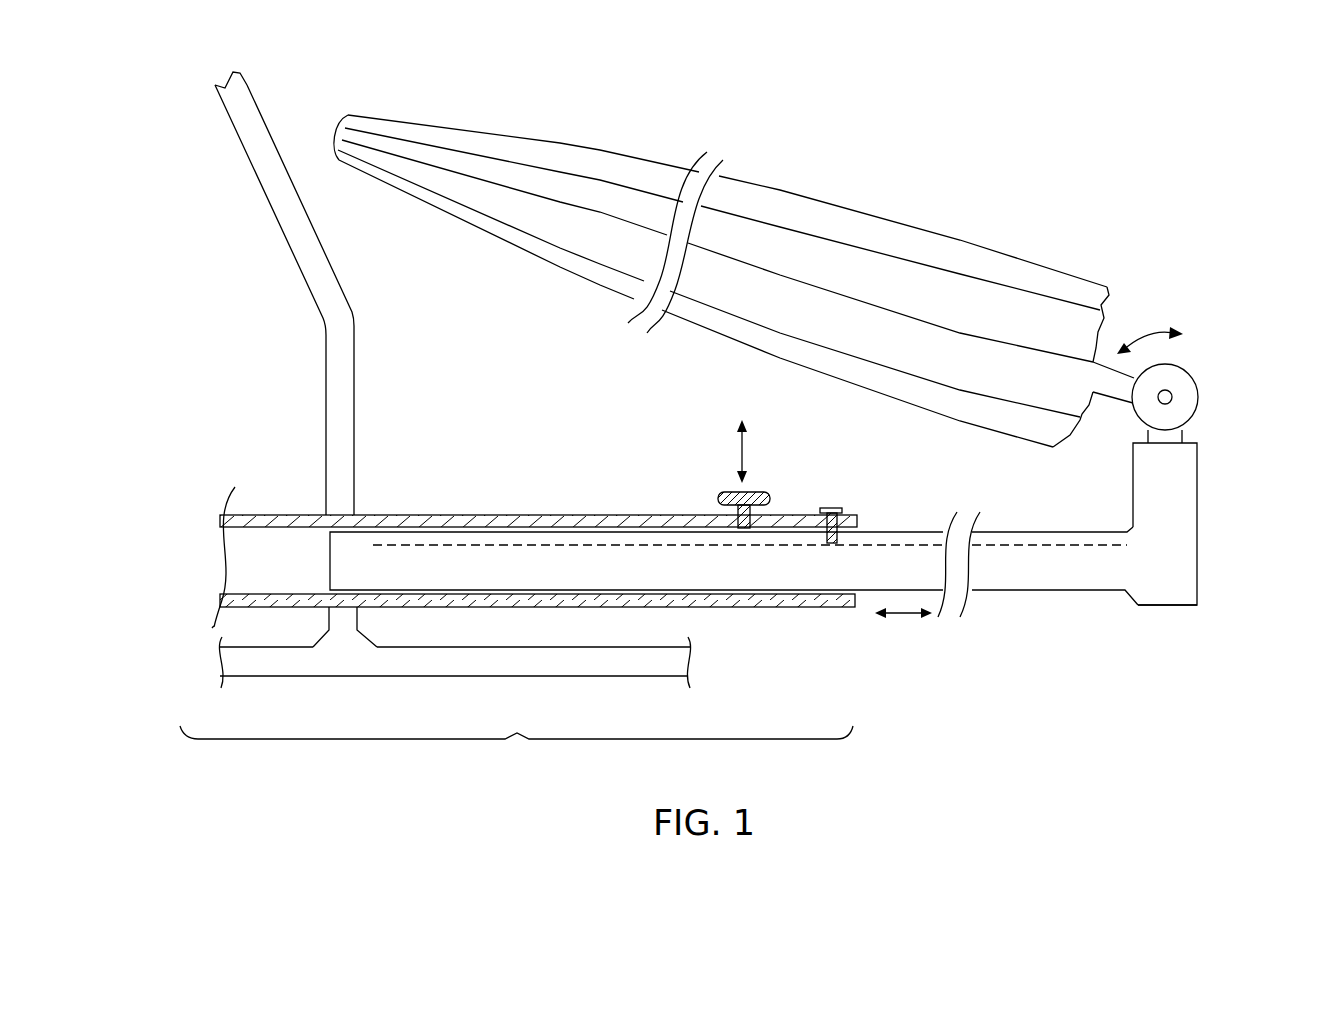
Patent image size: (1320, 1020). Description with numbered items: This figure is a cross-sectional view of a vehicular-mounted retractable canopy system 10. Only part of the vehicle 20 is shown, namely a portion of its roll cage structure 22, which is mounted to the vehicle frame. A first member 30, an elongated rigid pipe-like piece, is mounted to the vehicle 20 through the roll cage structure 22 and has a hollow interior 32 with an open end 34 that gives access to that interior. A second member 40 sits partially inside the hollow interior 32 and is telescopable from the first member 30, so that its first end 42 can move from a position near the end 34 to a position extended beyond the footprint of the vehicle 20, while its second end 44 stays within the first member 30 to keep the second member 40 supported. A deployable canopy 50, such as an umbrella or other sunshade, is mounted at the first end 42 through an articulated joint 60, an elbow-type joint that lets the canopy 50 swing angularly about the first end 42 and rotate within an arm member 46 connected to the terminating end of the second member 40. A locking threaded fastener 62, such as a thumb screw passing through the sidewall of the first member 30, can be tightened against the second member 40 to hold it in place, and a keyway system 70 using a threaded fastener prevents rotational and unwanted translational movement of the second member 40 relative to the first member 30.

The vehicular-mounted retractable canopy system 10 is at (232, 192).
The vehicle 20 is at (516, 757).
The roll cage structure 22 is at (328, 344).
The first member 30 is at (433, 517).
The hollow interior 32 is at (273, 550).
The end of the first member 34 is at (860, 593).
The second member 40 is at (1057, 575).
The first end 42 is at (1168, 616).
The second end 44 is at (365, 527).
The arm member 46 is at (1183, 503).
The deployable canopy 50 is at (883, 272).
The articulated joint 60 is at (1183, 410).
The locking threaded fastener 62 is at (758, 490).
The keyway system 70 is at (850, 501).